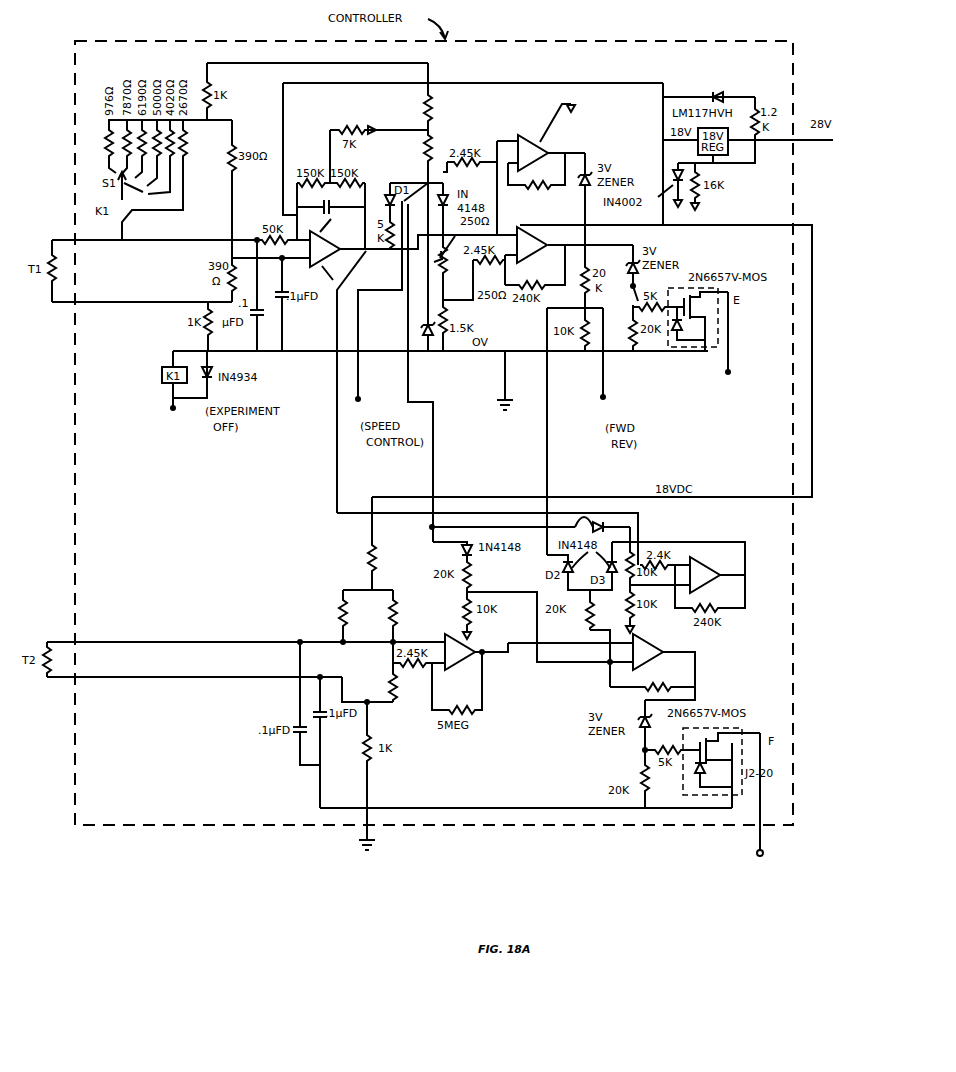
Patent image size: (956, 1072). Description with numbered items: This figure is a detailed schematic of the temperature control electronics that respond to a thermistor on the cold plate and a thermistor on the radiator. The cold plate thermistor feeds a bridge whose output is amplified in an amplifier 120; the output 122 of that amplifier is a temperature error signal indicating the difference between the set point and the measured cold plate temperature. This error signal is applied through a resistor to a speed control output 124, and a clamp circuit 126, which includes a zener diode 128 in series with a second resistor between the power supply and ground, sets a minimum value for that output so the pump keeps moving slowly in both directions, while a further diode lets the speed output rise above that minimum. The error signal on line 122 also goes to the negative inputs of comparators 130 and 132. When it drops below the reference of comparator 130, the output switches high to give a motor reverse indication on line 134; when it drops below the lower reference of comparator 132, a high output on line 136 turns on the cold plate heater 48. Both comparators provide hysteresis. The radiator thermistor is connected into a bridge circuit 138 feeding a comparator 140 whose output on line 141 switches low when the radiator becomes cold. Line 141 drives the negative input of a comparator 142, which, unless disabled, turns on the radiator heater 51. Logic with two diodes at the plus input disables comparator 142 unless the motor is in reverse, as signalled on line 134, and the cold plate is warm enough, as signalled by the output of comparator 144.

The amplifier 120 is at (328, 251).
The output of amplifier 122 is at (361, 382).
The speed control output 124 is at (359, 393).
The clamp circuit 126 is at (428, 182).
The zener diode 128 is at (400, 322).
The comparator 130 is at (519, 142).
The comparator 132 is at (530, 257).
The line 134 is at (604, 393).
The line 136 is at (569, 247).
The bridge circuit 138 is at (378, 623).
The comparator 140 is at (461, 670).
The line 141 is at (486, 659).
The comparator 142 is at (660, 657).
The comparator 144 is at (713, 583).
The cold plate heater 48 is at (748, 351).
The radiator heater 51 is at (752, 811).